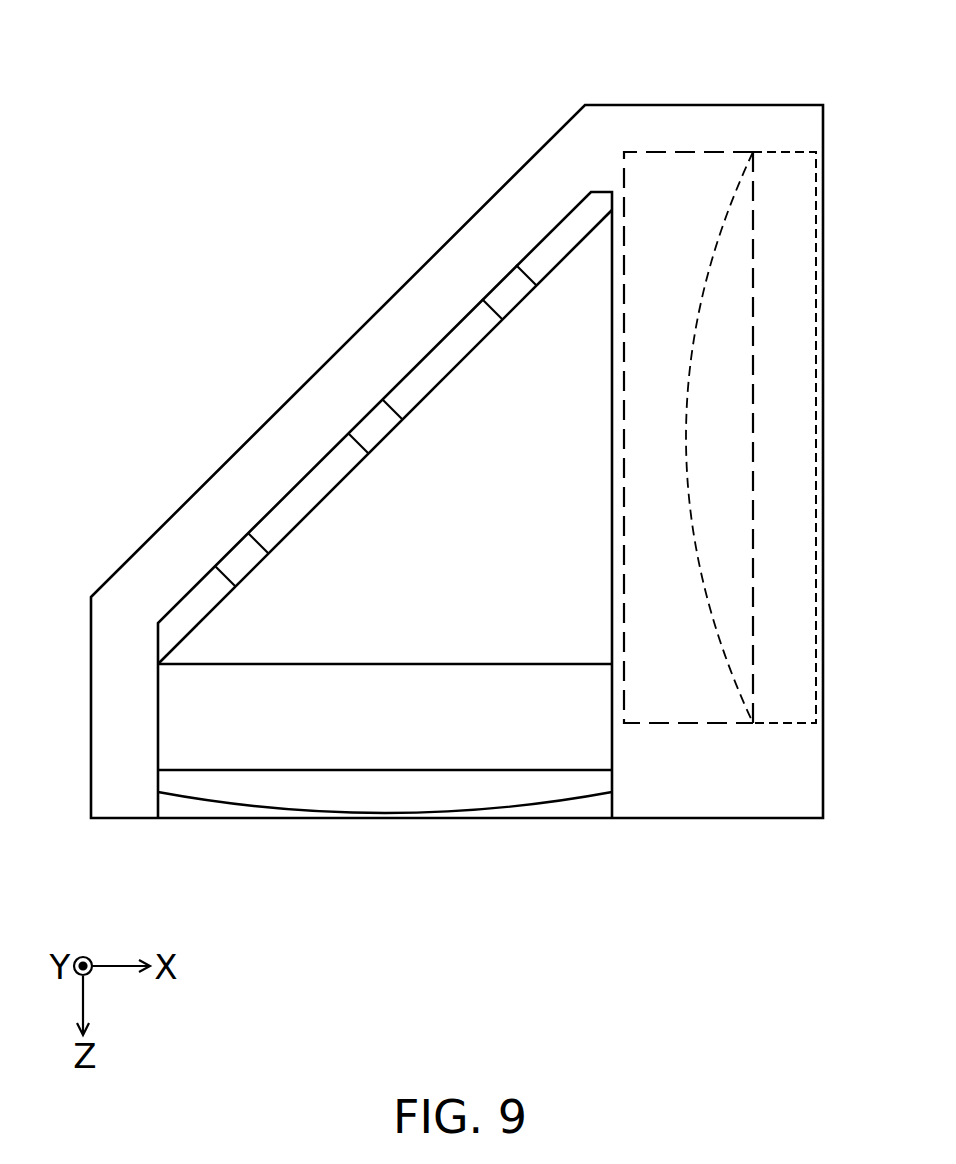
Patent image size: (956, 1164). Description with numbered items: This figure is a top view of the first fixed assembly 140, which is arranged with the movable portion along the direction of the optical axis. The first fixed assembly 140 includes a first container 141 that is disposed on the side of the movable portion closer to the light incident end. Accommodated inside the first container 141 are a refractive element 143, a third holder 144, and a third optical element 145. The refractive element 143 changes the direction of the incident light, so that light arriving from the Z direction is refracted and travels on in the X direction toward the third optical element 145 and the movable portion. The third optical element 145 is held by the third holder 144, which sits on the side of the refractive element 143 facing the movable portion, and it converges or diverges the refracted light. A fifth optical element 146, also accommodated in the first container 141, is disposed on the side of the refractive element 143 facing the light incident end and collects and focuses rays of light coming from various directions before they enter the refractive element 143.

The first fixed assembly 140 is at (274, 332).
The first container 141 is at (537, 187).
The refractive element 143 is at (468, 588).
The third holder 144 is at (688, 180).
The third optical element 145 is at (790, 180).
The fifth optical element 146 is at (300, 743).